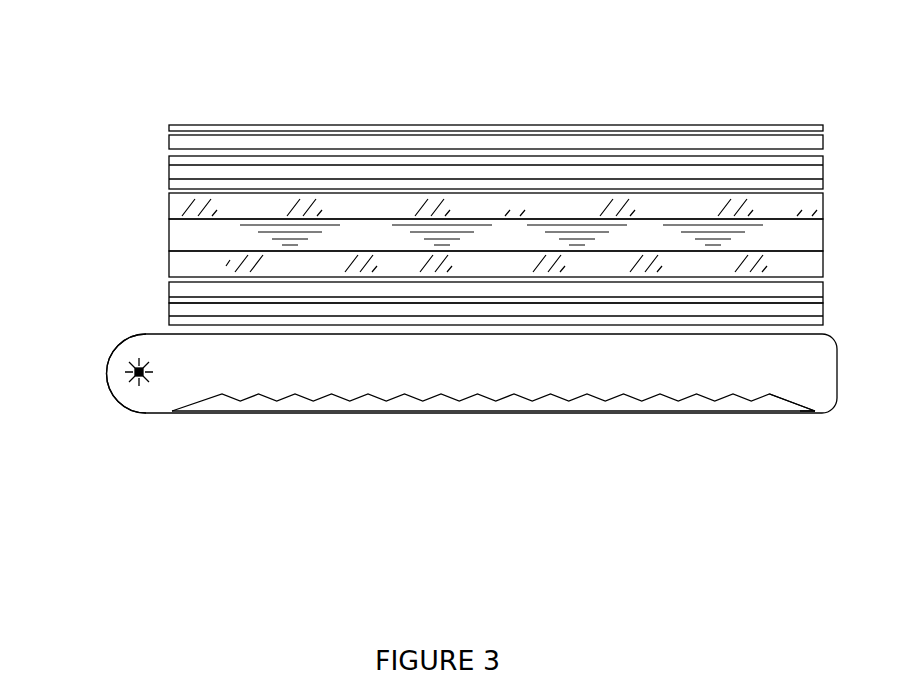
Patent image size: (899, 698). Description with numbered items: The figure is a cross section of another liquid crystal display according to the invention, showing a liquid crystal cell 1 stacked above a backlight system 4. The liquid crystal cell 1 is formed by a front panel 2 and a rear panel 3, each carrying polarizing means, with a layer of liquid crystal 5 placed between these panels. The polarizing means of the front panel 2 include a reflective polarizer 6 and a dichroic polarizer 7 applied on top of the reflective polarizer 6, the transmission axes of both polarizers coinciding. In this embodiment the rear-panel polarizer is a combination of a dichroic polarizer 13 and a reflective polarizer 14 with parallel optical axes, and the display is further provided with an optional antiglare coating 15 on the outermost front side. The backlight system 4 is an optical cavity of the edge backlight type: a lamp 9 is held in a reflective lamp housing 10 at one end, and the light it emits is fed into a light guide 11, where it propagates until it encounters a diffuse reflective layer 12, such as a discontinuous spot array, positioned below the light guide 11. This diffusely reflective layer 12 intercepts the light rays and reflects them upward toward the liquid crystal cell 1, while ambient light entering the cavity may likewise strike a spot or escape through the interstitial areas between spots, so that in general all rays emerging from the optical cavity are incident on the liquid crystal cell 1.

The liquid crystal cell 1 is at (845, 123).
The front panel 2 is at (176, 202).
The rear panel 3 is at (176, 263).
The backlight system 4 is at (845, 335).
The layer of liquid crystal 5 is at (176, 234).
The reflective polarizer 6 is at (176, 171).
The dichroic polarizer 7 is at (176, 143).
The lamp 9 is at (140, 379).
The reflective lamp housing 10 is at (106, 372).
The light guide 11 is at (811, 389).
The diffuse reflective layer 12 is at (510, 394).
The dichroic polarizer 13 is at (176, 289).
The reflective polarizer 14 is at (180, 309).
The antiglare coating 15 is at (178, 123).